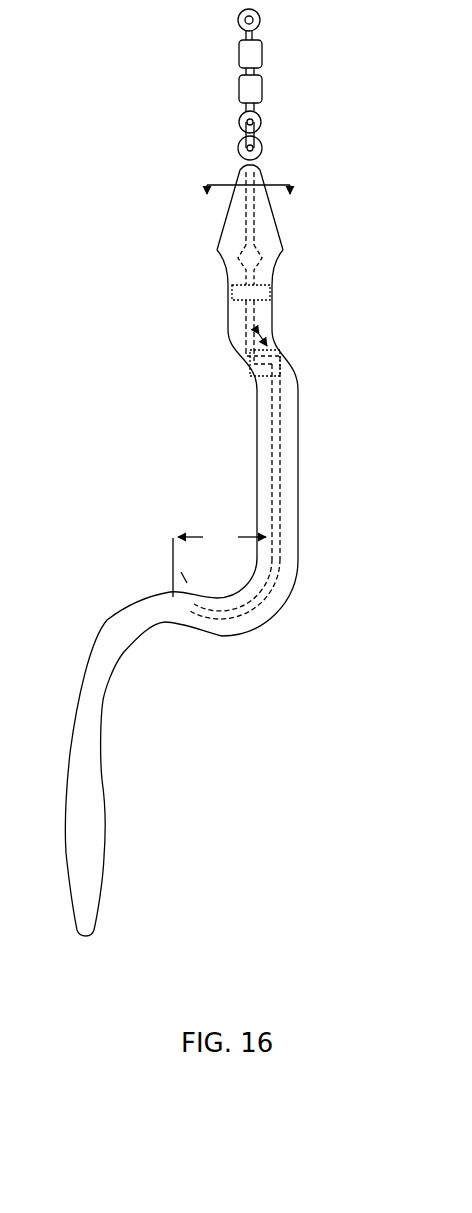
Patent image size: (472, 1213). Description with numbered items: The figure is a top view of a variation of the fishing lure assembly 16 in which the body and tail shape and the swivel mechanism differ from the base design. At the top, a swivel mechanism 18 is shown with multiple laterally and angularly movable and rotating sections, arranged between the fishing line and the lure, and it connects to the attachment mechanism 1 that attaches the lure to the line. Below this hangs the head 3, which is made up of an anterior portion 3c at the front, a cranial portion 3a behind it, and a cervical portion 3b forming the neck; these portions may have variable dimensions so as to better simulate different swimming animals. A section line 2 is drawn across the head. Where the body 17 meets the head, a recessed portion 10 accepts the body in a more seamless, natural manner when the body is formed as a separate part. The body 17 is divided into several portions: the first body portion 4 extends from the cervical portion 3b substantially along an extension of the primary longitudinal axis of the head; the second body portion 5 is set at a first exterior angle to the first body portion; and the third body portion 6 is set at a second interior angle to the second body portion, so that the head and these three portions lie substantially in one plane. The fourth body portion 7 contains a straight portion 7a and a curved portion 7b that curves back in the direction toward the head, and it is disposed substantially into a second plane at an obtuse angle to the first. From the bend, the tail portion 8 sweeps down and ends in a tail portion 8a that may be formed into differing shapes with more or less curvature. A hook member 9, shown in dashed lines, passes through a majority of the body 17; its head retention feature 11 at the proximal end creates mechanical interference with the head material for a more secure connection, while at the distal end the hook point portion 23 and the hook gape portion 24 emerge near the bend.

The attachment mechanism 1 is at (262, 146).
The section line 2- 2 is at (248, 205).
The head 3 is at (273, 170).
The cranial portion 3a is at (284, 250).
The cervical portion 3b is at (273, 288).
The anterior portion 3c is at (238, 168).
The first body portion 4 is at (269, 318).
The second body portion 5 is at (256, 376).
The third body portion 6 is at (300, 380).
The fourth body portion 7 is at (300, 585).
The straight portion 7a is at (299, 530).
The curved portion 7b is at (255, 626).
The tail portion 8 is at (145, 633).
The tail portion 8a is at (105, 818).
The hook member 9 is at (270, 513).
The recessed portion 10 is at (232, 300).
The head retention feature 11 is at (245, 268).
The fishing lure assembly 16 is at (106, 385).
The body 17 is at (234, 434).
The swivel mechanism 18 is at (210, 70).
The hook point portion 23 is at (170, 538).
The hook gape portion 24 is at (222, 536).